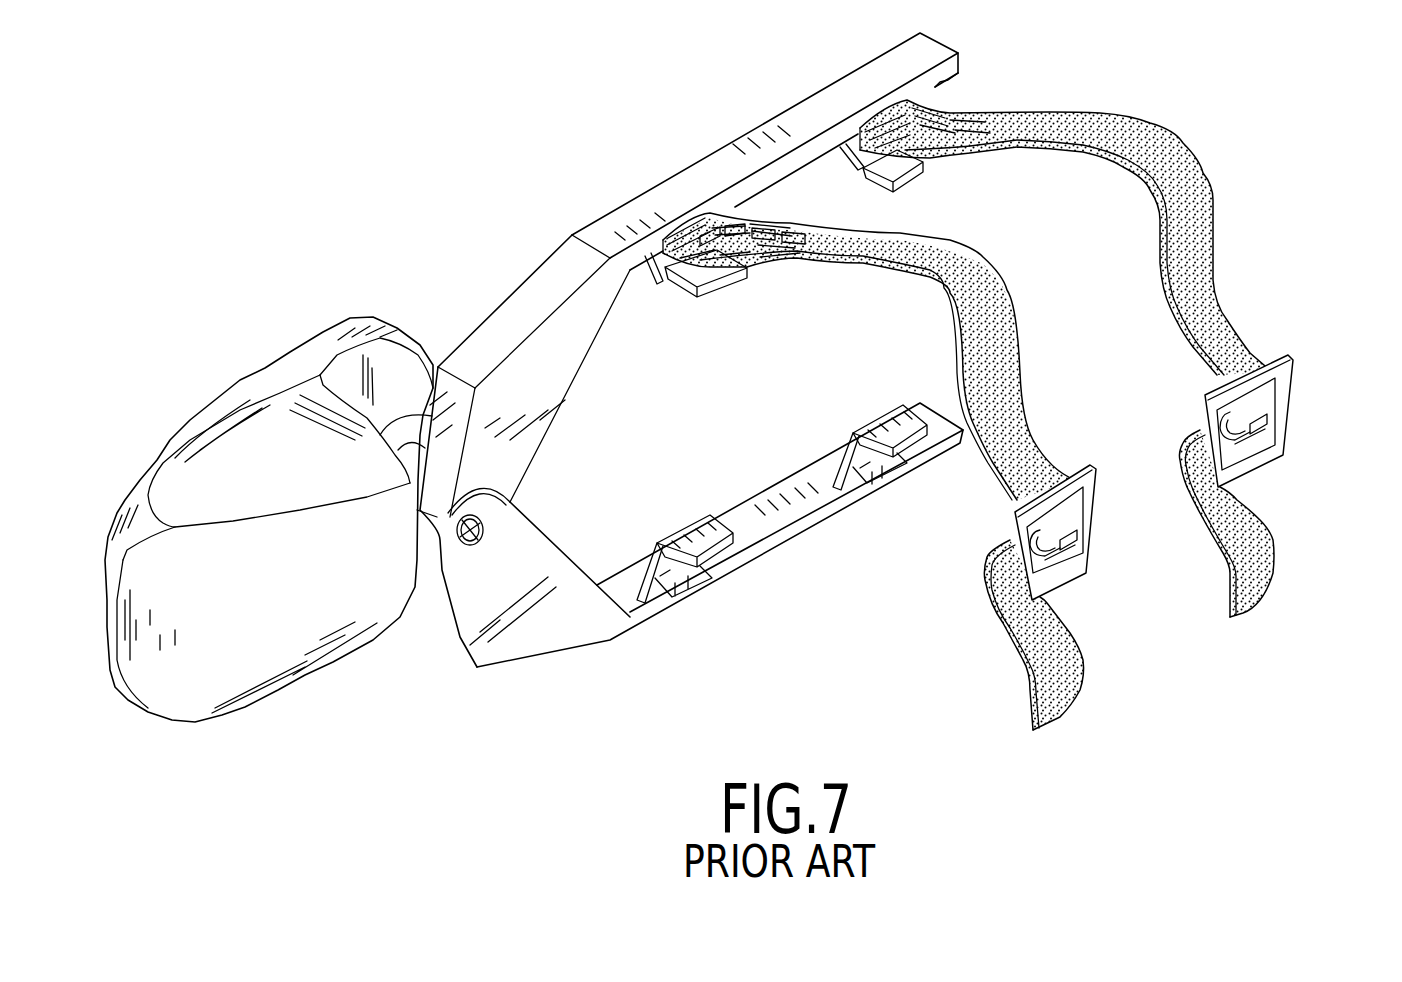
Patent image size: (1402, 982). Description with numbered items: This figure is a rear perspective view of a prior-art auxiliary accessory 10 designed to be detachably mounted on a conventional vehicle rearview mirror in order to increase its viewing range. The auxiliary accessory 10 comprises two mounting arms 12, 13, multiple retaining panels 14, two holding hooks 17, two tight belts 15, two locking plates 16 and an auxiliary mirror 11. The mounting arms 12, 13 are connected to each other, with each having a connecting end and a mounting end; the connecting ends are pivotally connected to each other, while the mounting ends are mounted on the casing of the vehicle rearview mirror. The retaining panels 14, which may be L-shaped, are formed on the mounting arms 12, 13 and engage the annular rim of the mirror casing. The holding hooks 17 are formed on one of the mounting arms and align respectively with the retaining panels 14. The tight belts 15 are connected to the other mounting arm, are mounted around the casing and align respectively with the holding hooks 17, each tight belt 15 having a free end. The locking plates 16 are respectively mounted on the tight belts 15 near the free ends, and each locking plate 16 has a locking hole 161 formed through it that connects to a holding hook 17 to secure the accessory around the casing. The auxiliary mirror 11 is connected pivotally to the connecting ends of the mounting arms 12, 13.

The auxiliary accessory 10 is at (596, 178).
The auxiliary mirror 11 is at (292, 357).
The mounting arm 12 is at (790, 118).
The mounting arm 13 is at (803, 537).
The retaining panel 14 is at (716, 283).
The tight belt 15 is at (1176, 132).
The locking plate 16 is at (1293, 368).
The locking hole 161 is at (1275, 440).
The holding hook 17 is at (905, 487).